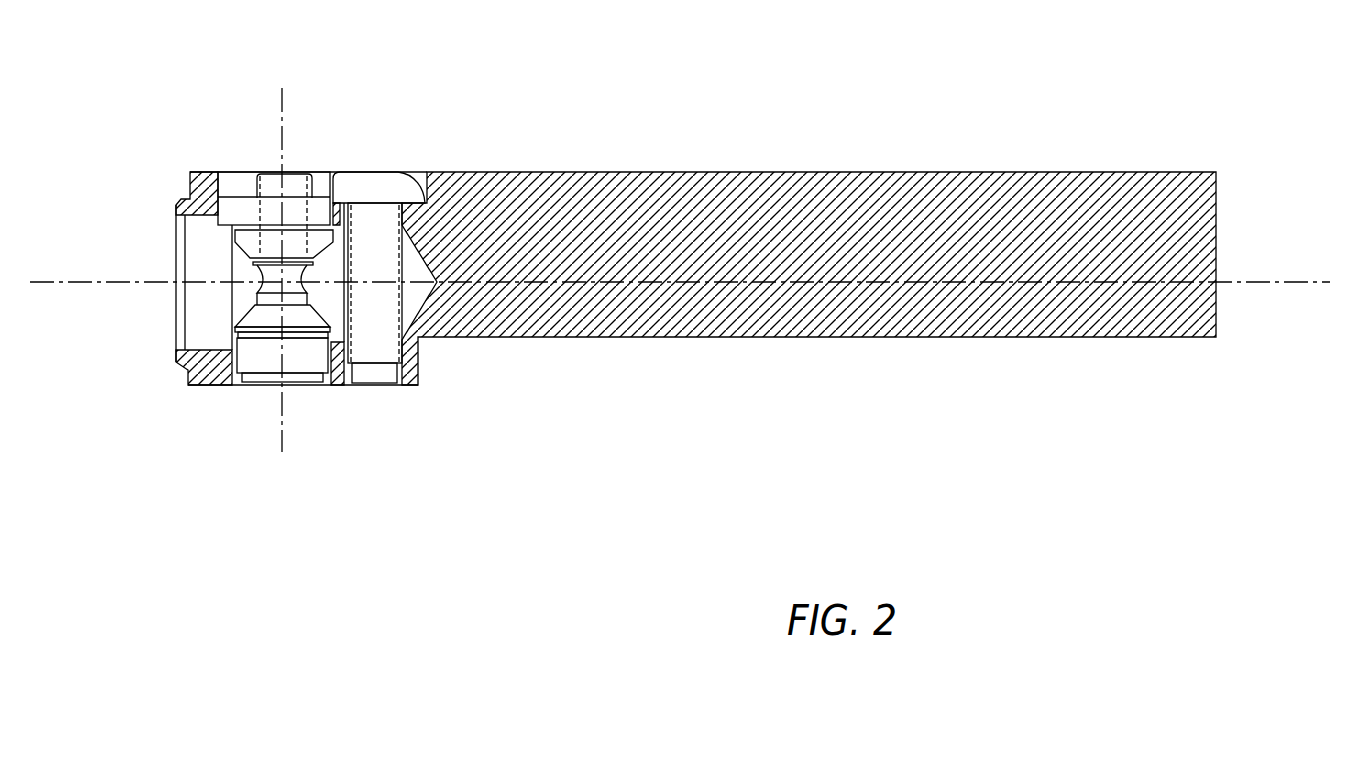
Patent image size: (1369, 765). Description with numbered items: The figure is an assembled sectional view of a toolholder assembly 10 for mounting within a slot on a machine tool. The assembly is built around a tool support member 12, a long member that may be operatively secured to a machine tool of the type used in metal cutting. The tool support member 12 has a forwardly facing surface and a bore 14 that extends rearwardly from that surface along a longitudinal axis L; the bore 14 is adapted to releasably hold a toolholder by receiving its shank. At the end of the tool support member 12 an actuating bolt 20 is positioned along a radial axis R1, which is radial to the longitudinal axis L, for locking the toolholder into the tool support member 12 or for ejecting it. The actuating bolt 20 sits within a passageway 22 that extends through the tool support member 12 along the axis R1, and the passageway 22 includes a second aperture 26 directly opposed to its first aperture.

The toolholder assembly 10 is at (772, 88).
The tool support member 12 is at (1045, 171).
The bore 14 is at (202, 312).
The actuating bolt 20 is at (320, 362).
The passageway 22 is at (231, 172).
The second aperture 26 is at (225, 190).
The longitudinal axis L is at (1282, 282).
The radial axis R1 is at (283, 110).